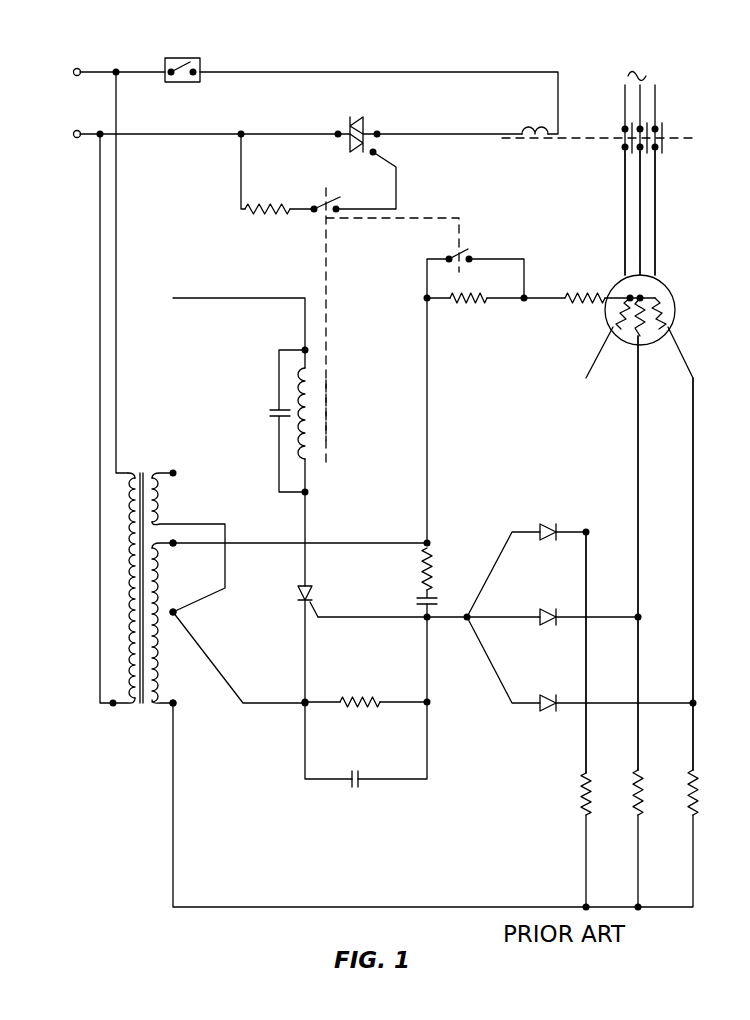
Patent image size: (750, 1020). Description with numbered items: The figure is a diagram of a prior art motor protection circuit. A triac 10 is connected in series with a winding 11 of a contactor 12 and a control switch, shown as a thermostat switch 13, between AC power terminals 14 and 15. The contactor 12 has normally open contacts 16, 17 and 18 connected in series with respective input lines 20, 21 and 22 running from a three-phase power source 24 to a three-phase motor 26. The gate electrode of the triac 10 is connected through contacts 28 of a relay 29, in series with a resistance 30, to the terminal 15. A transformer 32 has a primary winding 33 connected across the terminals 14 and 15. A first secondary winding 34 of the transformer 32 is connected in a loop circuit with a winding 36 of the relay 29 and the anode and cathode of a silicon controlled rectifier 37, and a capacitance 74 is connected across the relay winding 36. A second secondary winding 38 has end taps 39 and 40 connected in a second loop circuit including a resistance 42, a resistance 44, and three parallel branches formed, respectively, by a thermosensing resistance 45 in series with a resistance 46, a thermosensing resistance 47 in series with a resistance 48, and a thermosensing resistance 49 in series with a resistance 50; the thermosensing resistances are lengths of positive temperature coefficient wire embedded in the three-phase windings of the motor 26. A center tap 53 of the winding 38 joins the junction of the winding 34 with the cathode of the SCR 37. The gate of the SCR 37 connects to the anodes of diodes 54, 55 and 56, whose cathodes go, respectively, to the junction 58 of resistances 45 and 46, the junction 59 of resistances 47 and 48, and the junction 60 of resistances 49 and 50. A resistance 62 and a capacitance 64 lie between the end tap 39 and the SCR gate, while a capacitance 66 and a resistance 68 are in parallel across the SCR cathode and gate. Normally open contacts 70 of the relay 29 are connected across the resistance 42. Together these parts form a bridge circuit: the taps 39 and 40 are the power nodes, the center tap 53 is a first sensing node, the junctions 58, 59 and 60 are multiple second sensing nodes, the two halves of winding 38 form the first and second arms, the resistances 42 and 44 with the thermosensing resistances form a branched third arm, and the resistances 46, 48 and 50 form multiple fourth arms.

The triac 10 is at (366, 122).
The winding of contactor 11 is at (530, 141).
The contactor 12 is at (680, 118).
The thermostat switch 13 is at (182, 83).
The AC power terminal 14 is at (77, 76).
The AC power terminal 15 is at (77, 138).
The normally open contact 16 is at (622, 139).
The normally open contact 17 is at (667, 143).
The normally open contact 18 is at (672, 128).
The input line 20 is at (625, 218).
The input line 21 is at (640, 196).
The input line 22 is at (655, 226).
The three-phase power source 24 is at (662, 73).
The three-phase motor 26 is at (672, 290).
The relay contacts 28 is at (333, 218).
The relay 29 is at (343, 401).
The resistance 30 is at (267, 217).
The transformer 32 is at (142, 466).
The primary winding 33 is at (113, 703).
The first secondary winding 34 is at (168, 506).
The relay winding 36 is at (310, 468).
The silicon controlled rectifier 37 is at (312, 592).
The second secondary winding 38 is at (172, 677).
The end tap 39 is at (176, 549).
The end tap 40 is at (176, 707).
The resistance 42 is at (465, 305).
The resistance 44 is at (580, 305).
The thermosensing resistance 45 is at (622, 335).
The resistance 46 is at (590, 800).
The thermosensing resistance 47 is at (652, 335).
The resistance 48 is at (645, 785).
The thermosensing resistance 49 is at (672, 312).
The resistance 50 is at (700, 800).
The center tap 53 is at (176, 612).
The diode 54 is at (545, 520).
The diode 55 is at (548, 612).
The diode 56 is at (545, 698).
The junction 58 is at (588, 492).
The junction 59 is at (640, 532).
The junction 60 is at (695, 580).
The resistance 62 is at (432, 570).
The capacitance 64 is at (432, 598).
The capacitance 66 is at (365, 775).
The resistance 68 is at (360, 698).
The normally open relay contacts 70 is at (468, 252).
The capacitance 74 is at (279, 410).